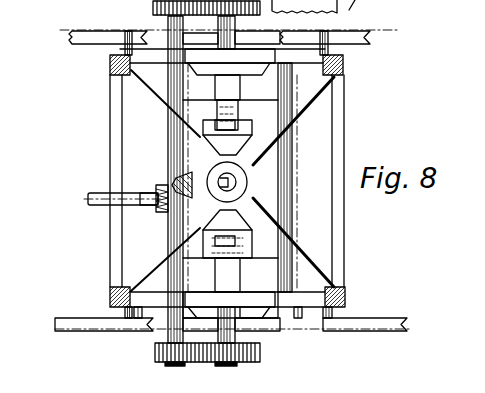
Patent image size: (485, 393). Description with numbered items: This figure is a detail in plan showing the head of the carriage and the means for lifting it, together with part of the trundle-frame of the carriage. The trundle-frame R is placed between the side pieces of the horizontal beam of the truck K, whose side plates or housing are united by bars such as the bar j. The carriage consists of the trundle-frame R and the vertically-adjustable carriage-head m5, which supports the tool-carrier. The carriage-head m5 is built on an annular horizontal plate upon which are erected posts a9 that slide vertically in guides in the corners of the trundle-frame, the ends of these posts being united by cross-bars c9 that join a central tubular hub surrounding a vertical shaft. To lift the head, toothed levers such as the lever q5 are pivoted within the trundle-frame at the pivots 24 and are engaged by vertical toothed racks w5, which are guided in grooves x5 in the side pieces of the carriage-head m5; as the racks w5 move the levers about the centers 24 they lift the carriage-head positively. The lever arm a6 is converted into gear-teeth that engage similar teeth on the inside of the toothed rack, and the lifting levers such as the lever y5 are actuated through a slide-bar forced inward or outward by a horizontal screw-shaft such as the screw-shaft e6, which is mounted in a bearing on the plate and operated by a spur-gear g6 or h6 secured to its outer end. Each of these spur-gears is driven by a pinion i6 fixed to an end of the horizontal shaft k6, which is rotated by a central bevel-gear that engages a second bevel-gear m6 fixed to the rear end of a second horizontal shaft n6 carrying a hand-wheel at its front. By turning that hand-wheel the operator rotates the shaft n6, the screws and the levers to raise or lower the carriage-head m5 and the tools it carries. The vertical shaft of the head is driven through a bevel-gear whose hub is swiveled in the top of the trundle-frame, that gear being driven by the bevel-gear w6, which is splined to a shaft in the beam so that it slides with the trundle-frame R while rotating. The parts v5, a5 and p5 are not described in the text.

The trundle-frame R is at (376, 329).
The pivot 24 is at (324, 326).
The posts a9 is at (224, 184).
The toothed lever q5 is at (292, 93).
The spur-gear h6 is at (138, 67).
The carriage-head m5 is at (311, 177).
The vertical toothed rack w5 is at (207, 63).
The groove x5 is at (229, 187).
The horizontal arm a6 is at (230, 2).
The hub a5 is at (227, 183).
The lever y5 is at (227, 182).
The bevel-gear w6 is at (227, 182).
The bar j is at (232, 182).
The cross-bar c9 is at (232, 180).
The truck K is at (122, 209).
The second horizontal shaft n6 is at (153, 196).
The bevel-gear m6 is at (158, 208).
The wedge v5 is at (186, 176).
The bolt p5 is at (298, 306).
The horizontal shaft k6 is at (191, 311).
The horizontal screw-shaft e6 is at (233, 314).
The pinion i6 is at (201, 356).
The spur-gear g6 is at (210, 369).